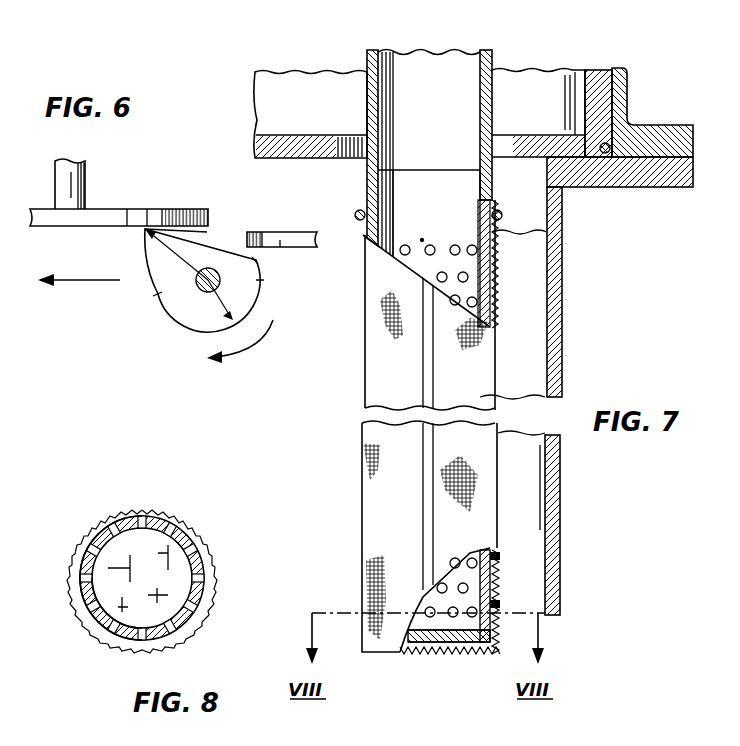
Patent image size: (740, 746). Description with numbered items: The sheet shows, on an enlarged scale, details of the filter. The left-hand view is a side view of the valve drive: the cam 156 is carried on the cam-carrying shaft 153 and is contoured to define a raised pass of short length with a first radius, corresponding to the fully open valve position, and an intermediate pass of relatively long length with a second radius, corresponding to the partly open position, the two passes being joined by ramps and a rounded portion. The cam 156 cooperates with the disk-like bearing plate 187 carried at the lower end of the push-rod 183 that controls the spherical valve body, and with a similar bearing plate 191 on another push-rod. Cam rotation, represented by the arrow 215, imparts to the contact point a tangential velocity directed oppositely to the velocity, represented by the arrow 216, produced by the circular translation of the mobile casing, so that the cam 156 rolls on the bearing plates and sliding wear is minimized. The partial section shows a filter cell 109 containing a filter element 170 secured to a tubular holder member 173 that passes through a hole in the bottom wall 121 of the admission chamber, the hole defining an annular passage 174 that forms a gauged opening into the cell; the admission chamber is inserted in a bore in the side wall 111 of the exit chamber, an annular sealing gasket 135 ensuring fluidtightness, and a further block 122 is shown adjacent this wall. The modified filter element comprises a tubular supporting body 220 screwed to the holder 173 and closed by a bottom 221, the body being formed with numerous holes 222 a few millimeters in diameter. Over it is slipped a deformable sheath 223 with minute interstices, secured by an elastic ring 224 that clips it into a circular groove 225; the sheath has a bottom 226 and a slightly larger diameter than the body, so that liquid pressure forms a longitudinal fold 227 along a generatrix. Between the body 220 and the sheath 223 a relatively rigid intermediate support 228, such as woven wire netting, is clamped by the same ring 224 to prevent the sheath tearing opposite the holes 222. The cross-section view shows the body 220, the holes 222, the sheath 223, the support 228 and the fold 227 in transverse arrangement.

In FIG. 7, the filter cell 109 is at (562, 284).
In FIG. 7, the side wall of exit chamber 111 is at (627, 82).
In FIG. 7, the bottom wall of admission chamber 121 is at (293, 138).
In FIG. 7, the block 122 is at (598, 77).
In FIG. 7, the annular sealing gasket 135 is at (608, 157).
In FIG. 6, the cam-carrying shaft 153 is at (203, 293).
In FIG. 6, the cam 156 is at (170, 312).
In FIG. 7, the filter element 170 is at (372, 328).
In FIG. 7, the tubular holder member 173 is at (375, 50).
In FIG. 7, the annular passage 174 is at (503, 142).
In FIG. 6, the push-rod 183 is at (86, 170).
In FIG. 6, the bearing plate 187 is at (167, 209).
In FIG. 6, the bearing plate 191 is at (258, 232).
In FIG. 6, the arrow representing cam rotation 215 is at (255, 343).
In FIG. 6, the arrow representing translation velocity 216 is at (80, 282).
In FIG. 7, the tubular supporting body 220 is at (480, 233).
In FIG. 8, the tubular supporting body 220 is at (207, 603).
In FIG. 7, the bottom 221 is at (423, 641).
In FIG. 8, the bottom 221 is at (160, 610).
In FIG. 7, the holes 222 is at (443, 582).
In FIG. 8, the holes 222 is at (200, 548).
In FIG. 7, the deformable sheath 223 is at (498, 232).
In FIG. 8, the deformable sheath 223 is at (102, 520).
In FIG. 7, the elastic ring 224 is at (356, 212).
In FIG. 7, the circular groove 225 is at (492, 213).
In FIG. 7, the bottom of sheath 226 is at (465, 656).
In FIG. 7, the longitudinal fold 227 is at (427, 503).
In FIG. 8, the longitudinal fold 227 is at (143, 647).
In FIG. 7, the intermediate support 228 is at (500, 568).
In FIG. 8, the intermediate support 228 is at (177, 520).